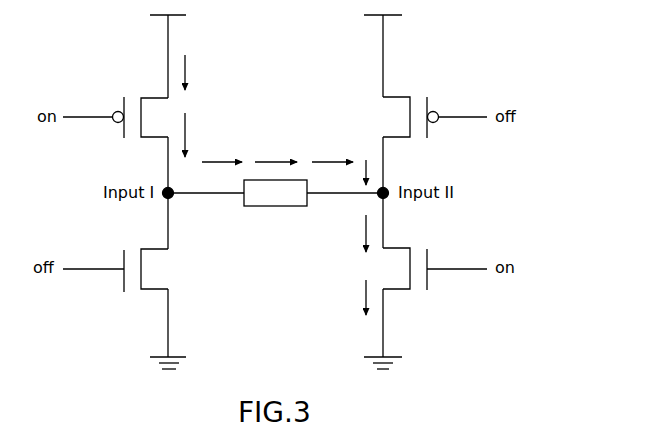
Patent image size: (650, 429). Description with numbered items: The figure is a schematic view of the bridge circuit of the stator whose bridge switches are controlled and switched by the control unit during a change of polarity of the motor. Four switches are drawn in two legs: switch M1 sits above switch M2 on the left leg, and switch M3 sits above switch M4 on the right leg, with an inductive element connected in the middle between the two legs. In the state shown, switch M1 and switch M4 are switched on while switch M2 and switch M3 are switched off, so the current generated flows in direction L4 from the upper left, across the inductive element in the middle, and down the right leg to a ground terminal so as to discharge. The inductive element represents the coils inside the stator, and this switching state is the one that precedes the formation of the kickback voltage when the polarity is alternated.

The switch M1 is at (124, 134).
The switch M2 is at (124, 286).
The switch M3 is at (427, 133).
The switch M4 is at (427, 285).
The direction L4 is at (275, 171).